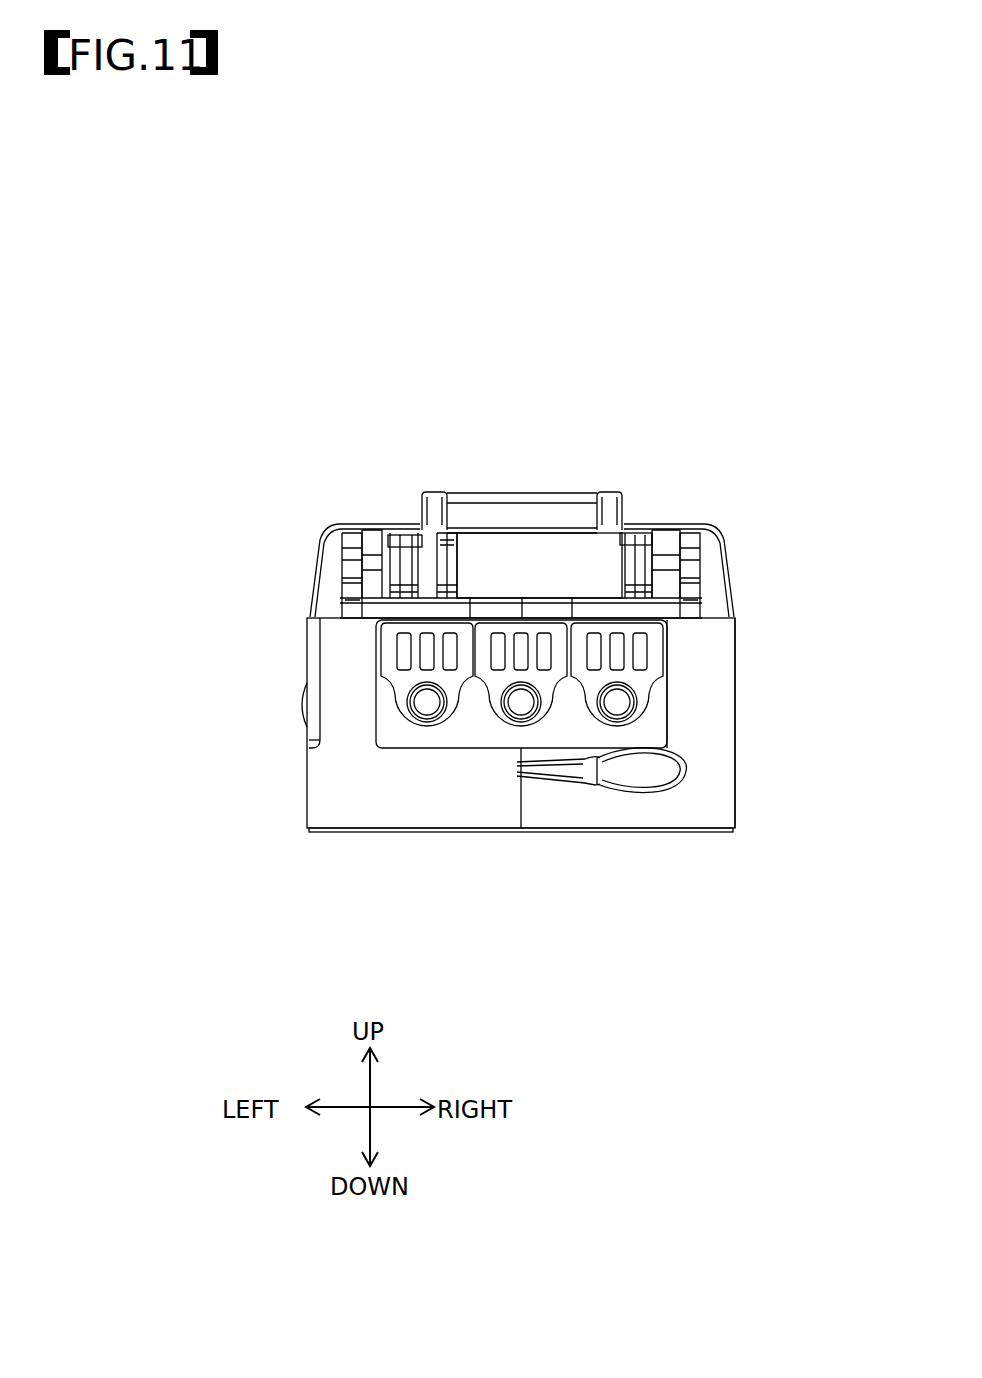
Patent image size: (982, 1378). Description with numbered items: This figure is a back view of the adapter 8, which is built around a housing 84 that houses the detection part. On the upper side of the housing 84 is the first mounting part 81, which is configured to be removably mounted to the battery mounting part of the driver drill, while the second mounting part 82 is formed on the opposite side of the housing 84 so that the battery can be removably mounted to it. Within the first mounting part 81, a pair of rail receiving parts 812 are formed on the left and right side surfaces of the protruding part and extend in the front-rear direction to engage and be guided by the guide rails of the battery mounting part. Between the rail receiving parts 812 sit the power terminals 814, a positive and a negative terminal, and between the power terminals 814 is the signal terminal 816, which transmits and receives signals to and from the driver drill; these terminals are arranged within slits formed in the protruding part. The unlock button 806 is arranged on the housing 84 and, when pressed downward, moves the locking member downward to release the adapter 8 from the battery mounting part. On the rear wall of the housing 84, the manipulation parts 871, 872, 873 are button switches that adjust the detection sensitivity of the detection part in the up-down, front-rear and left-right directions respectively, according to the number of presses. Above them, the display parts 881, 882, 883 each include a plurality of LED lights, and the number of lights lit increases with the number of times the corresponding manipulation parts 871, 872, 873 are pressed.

The adapter 8 is at (723, 340).
The first mounting part 81 is at (679, 491).
The second mounting part 82 is at (681, 839).
The housing 84 is at (714, 704).
The unlock button 806 is at (508, 498).
The rail receiving parts 812 is at (345, 567).
The power terminals 814 is at (402, 548).
The signal terminal 816 is at (440, 543).
The manipulation part 871 is at (426, 710).
The manipulation part 872 is at (520, 710).
The manipulation part 873 is at (617, 710).
The display part 881 is at (398, 666).
The display part 882 is at (492, 666).
The display part 883 is at (590, 668).